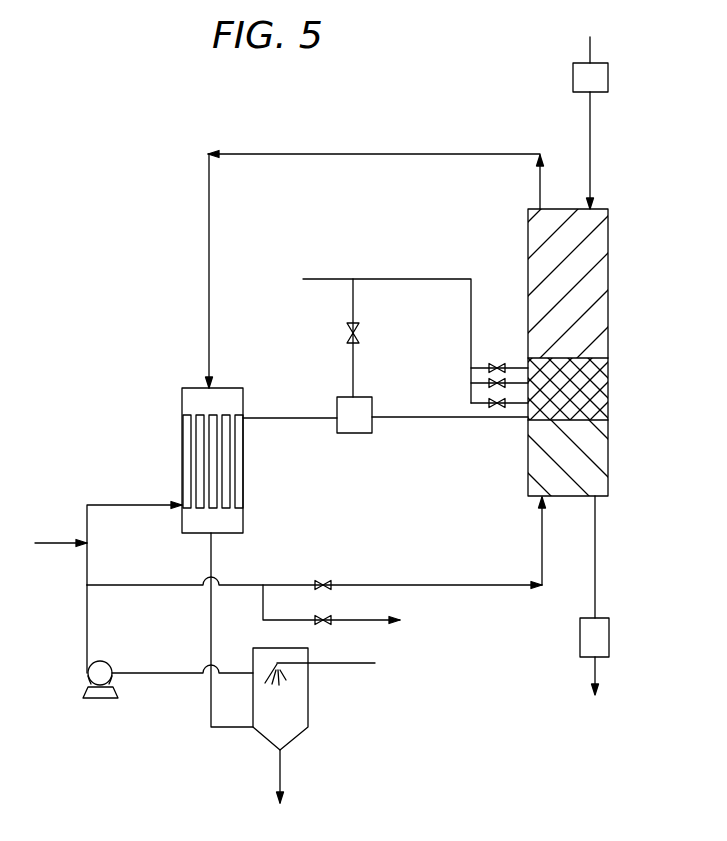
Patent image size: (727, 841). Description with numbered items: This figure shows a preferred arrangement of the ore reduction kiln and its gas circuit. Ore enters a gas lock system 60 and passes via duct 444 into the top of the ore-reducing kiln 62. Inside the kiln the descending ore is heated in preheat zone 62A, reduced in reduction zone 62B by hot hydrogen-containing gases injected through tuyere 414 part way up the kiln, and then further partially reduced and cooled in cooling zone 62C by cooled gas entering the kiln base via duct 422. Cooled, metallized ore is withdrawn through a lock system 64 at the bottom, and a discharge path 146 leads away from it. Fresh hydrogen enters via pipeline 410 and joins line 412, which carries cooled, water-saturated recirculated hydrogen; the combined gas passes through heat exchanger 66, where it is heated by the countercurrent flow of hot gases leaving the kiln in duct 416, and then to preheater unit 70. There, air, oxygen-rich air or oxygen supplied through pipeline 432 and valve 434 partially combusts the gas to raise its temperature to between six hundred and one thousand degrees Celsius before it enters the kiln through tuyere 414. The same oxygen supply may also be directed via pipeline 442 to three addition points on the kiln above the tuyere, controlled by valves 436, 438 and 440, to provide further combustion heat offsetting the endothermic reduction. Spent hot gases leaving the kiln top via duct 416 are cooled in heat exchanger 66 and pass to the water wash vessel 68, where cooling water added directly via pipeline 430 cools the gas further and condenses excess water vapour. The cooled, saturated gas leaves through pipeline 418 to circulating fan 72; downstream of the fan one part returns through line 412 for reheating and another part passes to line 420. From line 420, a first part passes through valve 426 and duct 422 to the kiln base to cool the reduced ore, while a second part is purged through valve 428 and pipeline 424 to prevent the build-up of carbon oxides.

The gas lock system 60 is at (609, 63).
The duct 444 is at (593, 130).
The ore-reducing kiln 62 is at (488, 370).
The preheat zone 62A is at (610, 255).
The reduction zone 62B is at (609, 374).
The cooling zone 62C is at (610, 449).
The duct 416 is at (478, 152).
The heat exchanger 66 is at (238, 528).
The tuyere 414 is at (425, 418).
The preheater unit 70 is at (354, 415).
The pipeline 432 is at (328, 278).
The valve 434 is at (376, 335).
The valve 436 is at (507, 348).
The pipeline 442 is at (471, 332).
The valve 438 is at (470, 382).
The valve 440 is at (471, 403).
The pipeline 410 is at (60, 531).
The line 412 is at (90, 562).
The pipeline 424 is at (87, 640).
The line 420 is at (117, 587).
The duct 422 is at (540, 521).
The valve 426 is at (330, 573).
The valve 428 is at (336, 636).
The circulating fan 72 is at (110, 662).
The pipeline 418 is at (140, 675).
The wash vessel 68 is at (302, 695).
The pipeline 430 is at (350, 665).
The lock system 64 is at (600, 641).
The product outlet line 146 is at (598, 672).